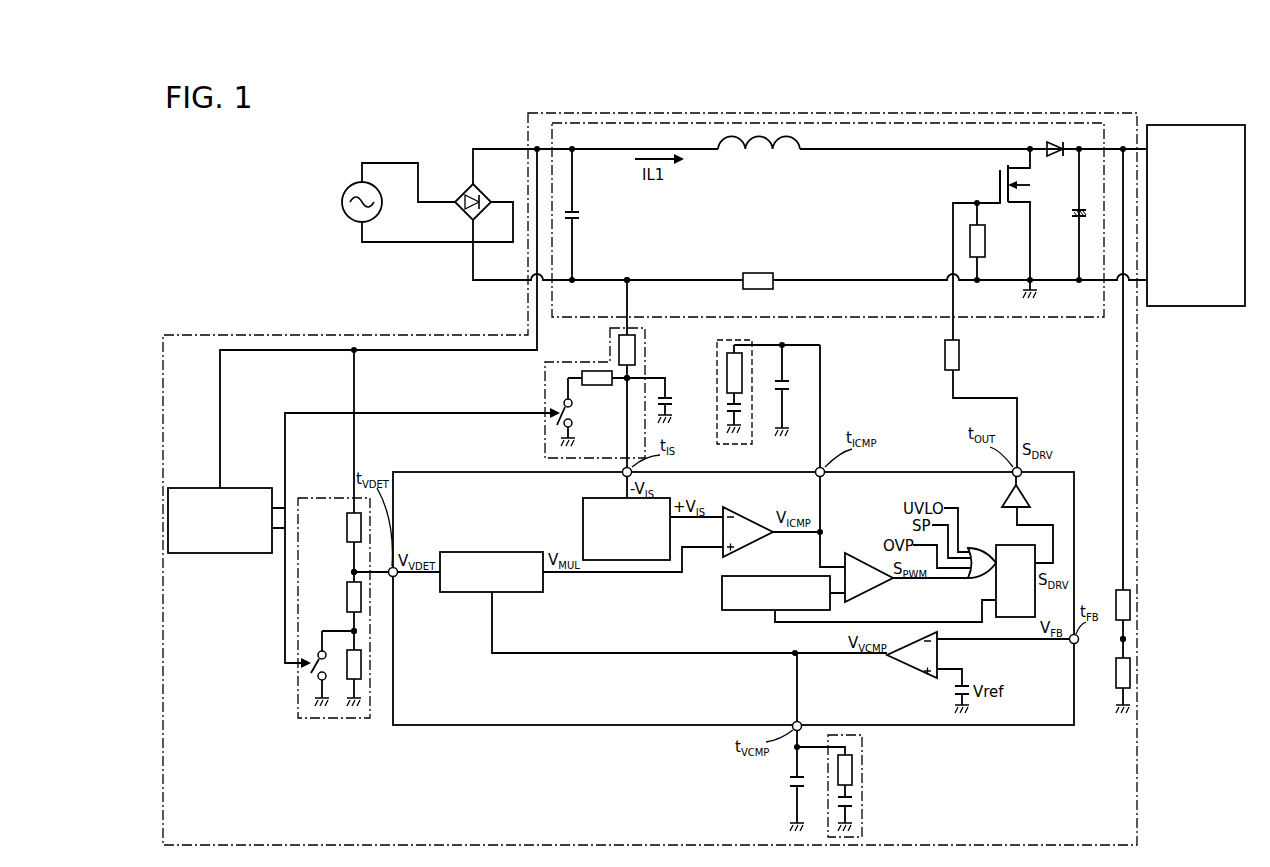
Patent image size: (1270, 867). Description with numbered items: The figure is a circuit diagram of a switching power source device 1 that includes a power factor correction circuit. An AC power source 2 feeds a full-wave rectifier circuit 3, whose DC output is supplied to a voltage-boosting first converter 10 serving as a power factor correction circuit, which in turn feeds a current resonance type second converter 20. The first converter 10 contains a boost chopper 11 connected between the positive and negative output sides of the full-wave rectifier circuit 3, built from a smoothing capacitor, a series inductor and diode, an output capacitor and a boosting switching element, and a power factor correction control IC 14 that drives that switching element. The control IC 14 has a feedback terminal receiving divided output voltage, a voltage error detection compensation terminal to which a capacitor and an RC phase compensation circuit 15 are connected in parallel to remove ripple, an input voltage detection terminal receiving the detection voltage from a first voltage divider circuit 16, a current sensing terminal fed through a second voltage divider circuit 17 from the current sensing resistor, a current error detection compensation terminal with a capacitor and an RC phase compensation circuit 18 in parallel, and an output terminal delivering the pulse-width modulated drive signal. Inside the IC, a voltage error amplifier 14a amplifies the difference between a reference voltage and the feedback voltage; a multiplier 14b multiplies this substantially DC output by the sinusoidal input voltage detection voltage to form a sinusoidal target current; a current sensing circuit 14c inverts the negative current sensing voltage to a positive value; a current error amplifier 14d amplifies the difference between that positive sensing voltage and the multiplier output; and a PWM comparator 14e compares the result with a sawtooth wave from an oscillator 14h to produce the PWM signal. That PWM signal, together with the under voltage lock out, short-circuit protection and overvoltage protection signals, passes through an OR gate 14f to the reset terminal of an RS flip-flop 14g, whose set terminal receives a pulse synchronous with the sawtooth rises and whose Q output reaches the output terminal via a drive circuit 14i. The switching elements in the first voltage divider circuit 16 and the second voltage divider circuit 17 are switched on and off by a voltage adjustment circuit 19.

The switching power source device 1 is at (461, 112).
The AC power source 2 is at (348, 185).
The full-wave rectifier circuit 3 is at (464, 185).
The first converter 10 is at (640, 113).
The boost chopper 11 is at (900, 123).
The power factor correction control IC 14 is at (926, 472).
The voltage error amplifier 14a is at (912, 670).
The multiplier 14b is at (503, 592).
The current sensing circuit 14c is at (583, 512).
The current error amplifier 14d is at (748, 507).
The PWM comparator 14e is at (864, 558).
The OR gate 14f is at (970, 547).
The RS flip-flop 14g is at (996, 592).
The oscillator 14h is at (722, 595).
The drive circuit 14i is at (1032, 497).
The RC phase compensation circuit 15 is at (862, 745).
The first voltage divider circuit 16 is at (330, 498).
The second voltage divider circuit 17 is at (545, 366).
The RC phase compensation circuit 18 is at (740, 444).
The voltage adjustment circuit 19 is at (240, 488).
The second converter 20 is at (1203, 125).